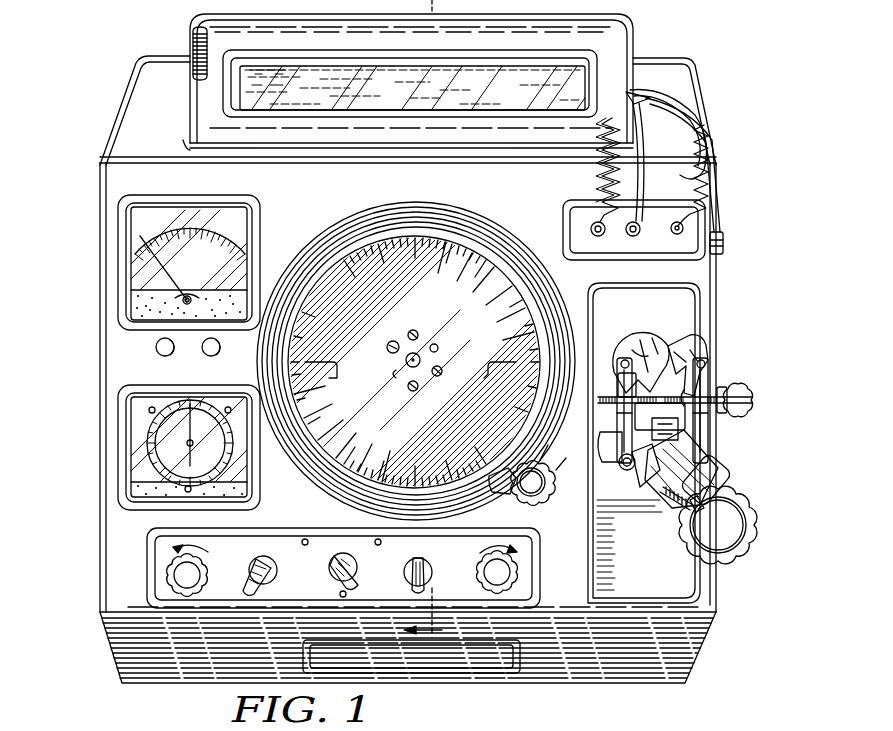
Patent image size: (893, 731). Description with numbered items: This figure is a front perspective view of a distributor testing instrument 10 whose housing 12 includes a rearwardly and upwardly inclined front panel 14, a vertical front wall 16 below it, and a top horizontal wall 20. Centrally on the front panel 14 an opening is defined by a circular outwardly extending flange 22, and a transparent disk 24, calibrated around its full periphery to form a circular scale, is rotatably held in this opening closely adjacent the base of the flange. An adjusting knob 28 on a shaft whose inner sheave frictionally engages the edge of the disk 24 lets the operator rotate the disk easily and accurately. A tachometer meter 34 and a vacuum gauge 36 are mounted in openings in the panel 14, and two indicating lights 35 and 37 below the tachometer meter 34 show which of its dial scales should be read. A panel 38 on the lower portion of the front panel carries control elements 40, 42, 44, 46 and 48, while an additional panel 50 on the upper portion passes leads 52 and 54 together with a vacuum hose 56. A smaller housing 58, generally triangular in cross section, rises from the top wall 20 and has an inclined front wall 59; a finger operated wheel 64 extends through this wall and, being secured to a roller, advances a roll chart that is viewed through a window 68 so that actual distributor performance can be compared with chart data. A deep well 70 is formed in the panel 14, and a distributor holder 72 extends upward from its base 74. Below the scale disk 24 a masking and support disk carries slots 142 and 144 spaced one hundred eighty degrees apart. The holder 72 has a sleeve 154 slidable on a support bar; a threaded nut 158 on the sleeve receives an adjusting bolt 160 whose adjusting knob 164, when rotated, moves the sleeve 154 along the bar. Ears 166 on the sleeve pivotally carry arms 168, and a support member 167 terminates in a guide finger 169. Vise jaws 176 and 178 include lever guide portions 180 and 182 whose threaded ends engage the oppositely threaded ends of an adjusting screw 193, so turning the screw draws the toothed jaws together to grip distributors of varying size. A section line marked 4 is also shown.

The section line 4- 4 is at (433, 320).
The distributor testing instrument 10 is at (76, 160).
The housing 12 is at (82, 508).
The front panel 14 is at (500, 194).
The vertical front wall 16 is at (607, 668).
The top horizontal wall 20 is at (155, 95).
The circular outwardly extending flange 22 is at (346, 226).
The transparent disk 24 is at (431, 316).
The adjusting knob 28 is at (541, 499).
The tachometer meter 34 is at (132, 272).
The indicating light 35 is at (158, 352).
The vacuum gauge 36 is at (130, 443).
The indicating light 37 is at (217, 355).
The panel 38 is at (541, 572).
The control element 40 is at (480, 568).
The control element 42 is at (408, 584).
The control element 44 is at (358, 573).
The control element 46 is at (278, 577).
The control element 48 is at (206, 573).
The additional panel 50 is at (565, 219).
The lead 52 is at (597, 220).
The lead 54 is at (704, 192).
The vacuum hose 56 is at (641, 192).
The smaller housing 58 is at (634, 37).
The inclined front wall 59 is at (426, 51).
The finger operated wheel 64 is at (194, 36).
The window 68 is at (376, 86).
The well 70 is at (708, 318).
The distributor holder 72 is at (728, 461).
The base 74 is at (640, 329).
The slot 142 is at (337, 379).
The slot 144 is at (484, 379).
The sleeve 154 is at (654, 487).
The threaded nut 158 is at (660, 506).
The adjusting bolt 160 is at (674, 512).
The adjusting knob 164 is at (745, 512).
The ears 166 is at (636, 474).
The support member 167 is at (666, 422).
The arms 168 is at (705, 368).
The guide finger 169 is at (686, 393).
The vise jaw 176 is at (630, 350).
The vise jaw 178 is at (700, 346).
The lever guide portion 180 is at (622, 392).
The lever guide portion 182 is at (686, 419).
The adjusting screw 193 is at (758, 396).